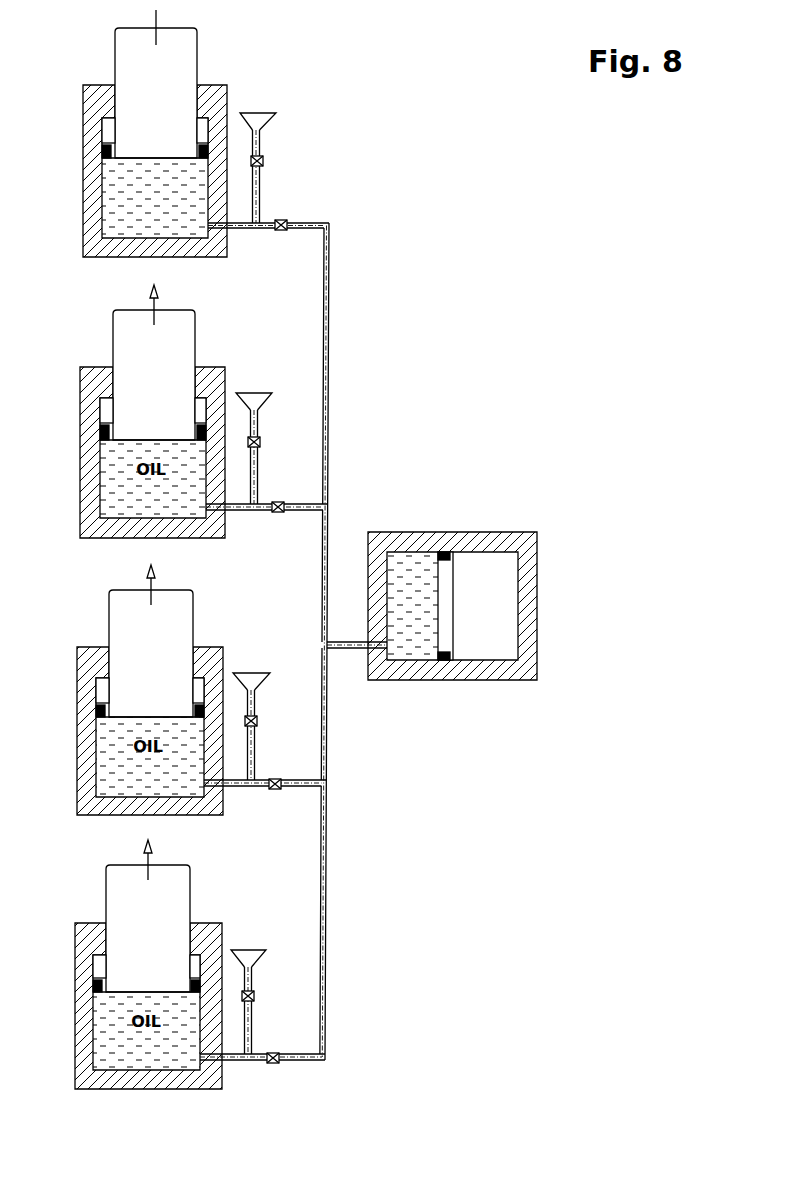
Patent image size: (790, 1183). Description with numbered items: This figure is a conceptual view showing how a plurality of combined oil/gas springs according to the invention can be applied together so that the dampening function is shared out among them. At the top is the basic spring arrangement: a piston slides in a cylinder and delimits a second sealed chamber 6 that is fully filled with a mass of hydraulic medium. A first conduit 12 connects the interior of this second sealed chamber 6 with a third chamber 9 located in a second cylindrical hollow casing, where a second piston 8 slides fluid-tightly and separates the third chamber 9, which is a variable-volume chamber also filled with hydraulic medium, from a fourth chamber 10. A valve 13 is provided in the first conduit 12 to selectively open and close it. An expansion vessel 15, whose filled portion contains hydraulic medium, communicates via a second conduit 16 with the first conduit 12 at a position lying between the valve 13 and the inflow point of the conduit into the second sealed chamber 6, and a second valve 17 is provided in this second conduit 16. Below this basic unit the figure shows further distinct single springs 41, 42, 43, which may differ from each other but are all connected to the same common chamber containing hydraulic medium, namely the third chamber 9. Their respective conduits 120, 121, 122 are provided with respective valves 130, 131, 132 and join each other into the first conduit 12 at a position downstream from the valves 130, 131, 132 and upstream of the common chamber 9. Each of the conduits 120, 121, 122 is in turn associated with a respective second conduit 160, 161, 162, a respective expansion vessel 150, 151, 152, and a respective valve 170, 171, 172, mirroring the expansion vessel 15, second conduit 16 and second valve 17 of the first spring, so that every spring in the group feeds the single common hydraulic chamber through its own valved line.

The second sealed chamber 6 is at (146, 205).
The second piston 8 is at (445, 570).
The third chamber 9 is at (406, 570).
The fourth chamber 10 is at (501, 570).
The first conduit 12 is at (241, 222).
The valve 13 is at (278, 232).
The expansion vessel 15 is at (269, 115).
The second conduit 16 is at (261, 194).
The second valve 17 is at (265, 161).
The single spring 41 is at (80, 485).
The single spring 42 is at (78, 762).
The single spring 43 is at (75, 1036).
The conduit 120 is at (239, 503).
The conduit 121 is at (235, 780).
The conduit 122 is at (233, 1054).
The valve 130 is at (276, 514).
The valve 131 is at (273, 791).
The valve 132 is at (271, 1065).
The expansion vessel 150 is at (265, 396).
The expansion vessel 151 is at (262, 676).
The expansion vessel 152 is at (259, 952).
The second conduit 160 is at (259, 474).
The second conduit 161 is at (256, 753).
The second conduit 162 is at (253, 1026).
The valve 170 is at (262, 442).
The valve 171 is at (259, 721).
The valve 172 is at (256, 996).